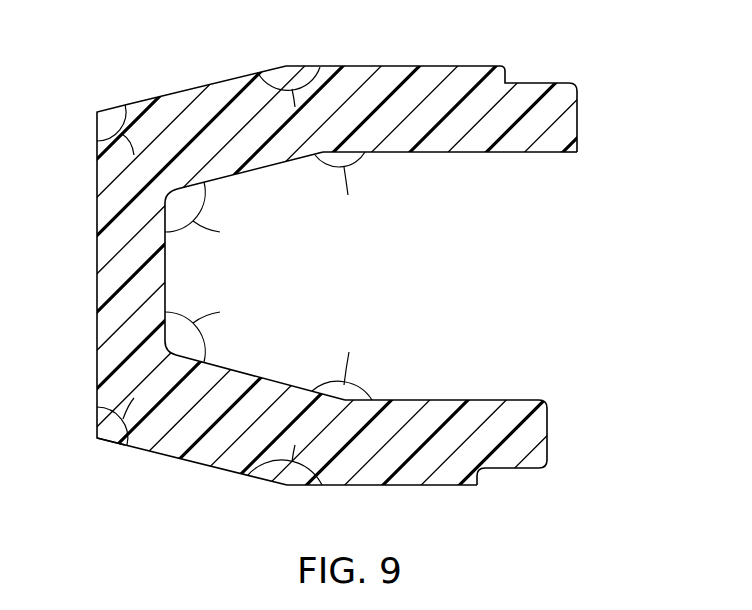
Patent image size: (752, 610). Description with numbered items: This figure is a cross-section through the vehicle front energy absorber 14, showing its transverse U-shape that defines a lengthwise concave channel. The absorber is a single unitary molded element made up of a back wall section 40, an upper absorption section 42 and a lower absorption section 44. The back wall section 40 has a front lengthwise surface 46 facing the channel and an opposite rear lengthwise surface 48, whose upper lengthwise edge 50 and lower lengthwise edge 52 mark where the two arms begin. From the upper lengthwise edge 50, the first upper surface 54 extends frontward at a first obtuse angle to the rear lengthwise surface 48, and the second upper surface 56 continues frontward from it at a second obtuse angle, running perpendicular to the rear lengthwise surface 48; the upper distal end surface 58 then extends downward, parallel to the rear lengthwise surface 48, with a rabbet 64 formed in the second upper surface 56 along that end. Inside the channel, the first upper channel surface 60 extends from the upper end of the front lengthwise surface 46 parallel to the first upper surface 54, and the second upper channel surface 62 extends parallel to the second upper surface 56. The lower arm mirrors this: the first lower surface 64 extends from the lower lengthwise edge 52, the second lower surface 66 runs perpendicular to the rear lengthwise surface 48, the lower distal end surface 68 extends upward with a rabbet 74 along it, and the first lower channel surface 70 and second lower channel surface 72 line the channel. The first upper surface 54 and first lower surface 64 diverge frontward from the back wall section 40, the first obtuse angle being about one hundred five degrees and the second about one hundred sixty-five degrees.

The energy absorber 14 is at (100, 43).
The back wall section 40 is at (125, 264).
The upper absorption section 42 is at (563, 134).
The lower absorption section 44 is at (522, 442).
The front lengthwise surface 46 is at (167, 263).
The rear lengthwise surface 48 is at (97, 302).
The upper lengthwise edge 50 is at (96, 110).
The lower lengthwise edge 52 is at (97, 438).
The first upper surface 54 is at (198, 87).
The second upper surface 56 is at (413, 66).
The upper distal end surface 58 is at (577, 110).
The first upper channel surface 60 is at (266, 168).
The second upper channel surface 62 is at (461, 152).
The rabbet / first lower surface 64 is at (537, 83).
The second lower surface 66 is at (403, 485).
The lower distal end surface 68 is at (547, 420).
The first lower channel surface 70 is at (263, 379).
The second lower channel surface 72 is at (460, 400).
The rabbet 74 is at (513, 468).